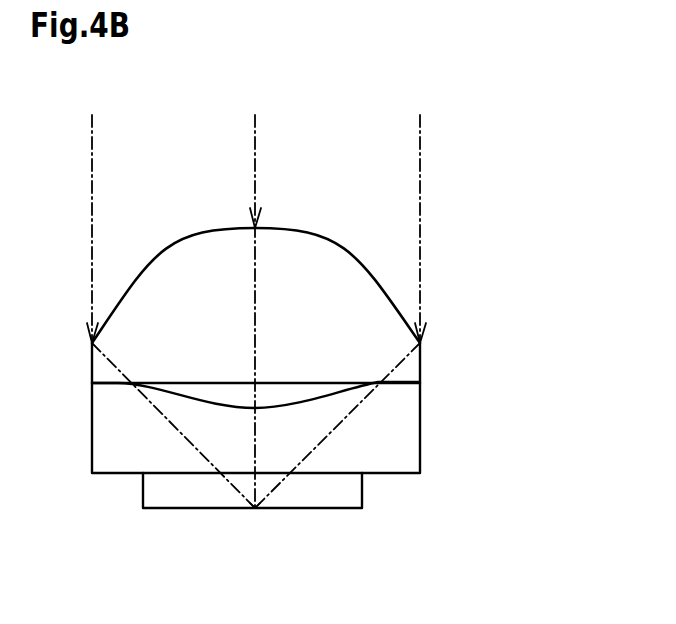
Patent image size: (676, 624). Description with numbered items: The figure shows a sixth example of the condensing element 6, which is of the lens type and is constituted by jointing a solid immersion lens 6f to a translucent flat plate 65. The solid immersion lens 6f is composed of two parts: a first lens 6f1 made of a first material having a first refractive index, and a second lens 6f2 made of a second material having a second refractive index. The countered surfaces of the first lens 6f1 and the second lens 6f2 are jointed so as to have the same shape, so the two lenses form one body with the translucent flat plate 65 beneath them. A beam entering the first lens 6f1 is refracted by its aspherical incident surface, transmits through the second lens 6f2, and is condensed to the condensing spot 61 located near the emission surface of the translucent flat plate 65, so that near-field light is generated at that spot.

The condensing element 6 is at (492, 258).
The solid immersion lens 6f is at (428, 382).
The first lens 6f1 is at (322, 237).
The second lens 6f2 is at (420, 450).
The translucent flat plate 65 is at (362, 492).
The condensing spot 61 is at (255, 508).